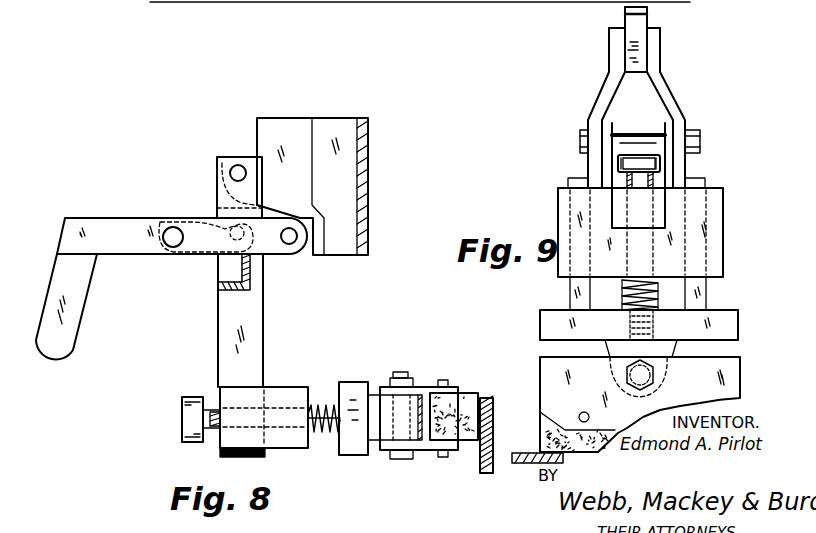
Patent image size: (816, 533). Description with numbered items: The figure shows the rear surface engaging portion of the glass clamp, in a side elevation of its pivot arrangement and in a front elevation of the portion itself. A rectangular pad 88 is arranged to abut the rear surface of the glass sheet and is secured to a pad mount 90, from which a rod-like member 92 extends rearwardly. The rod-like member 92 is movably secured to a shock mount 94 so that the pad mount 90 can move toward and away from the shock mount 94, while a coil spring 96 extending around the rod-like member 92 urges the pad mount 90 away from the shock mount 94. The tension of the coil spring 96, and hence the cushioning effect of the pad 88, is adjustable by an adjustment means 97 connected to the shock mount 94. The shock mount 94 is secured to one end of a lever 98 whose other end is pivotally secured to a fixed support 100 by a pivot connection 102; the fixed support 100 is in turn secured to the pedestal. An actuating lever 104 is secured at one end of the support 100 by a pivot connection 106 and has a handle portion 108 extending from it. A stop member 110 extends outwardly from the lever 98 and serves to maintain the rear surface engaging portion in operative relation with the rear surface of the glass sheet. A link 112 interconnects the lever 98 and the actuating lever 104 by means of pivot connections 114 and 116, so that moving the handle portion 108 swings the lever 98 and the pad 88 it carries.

In FIG. 8, the rectangular pad 88 is at (482, 398).
In FIG. 9, the rectangular pad 88 is at (542, 442).
In FIG. 8, the pad mount 90 is at (428, 387).
In FIG. 9, the pad mount 90 is at (740, 368).
In FIG. 8, the rod-like member 92 is at (212, 410).
In FIG. 9, the rod-like member 92 is at (653, 182).
In FIG. 8, the shock mount 94 is at (289, 387).
In FIG. 9, the shock mount 94 is at (723, 260).
In FIG. 8, the coil spring 96 is at (326, 394).
In FIG. 9, the coil spring 96 is at (655, 298).
In FIG. 8, the adjustment means 97 is at (182, 432).
In FIG. 9, the adjustment means 97 is at (660, 163).
In FIG. 8, the lever 98 is at (222, 325).
In FIG. 9, the lever 98 is at (667, 213).
In FIG. 8, the fixed support 100 is at (357, 112).
In FIG. 8, the pivot connection 102 is at (238, 165).
In FIG. 8, the actuating lever 104 is at (109, 222).
In FIG. 9, the actuating lever 104 is at (608, 89).
In FIG. 8, the pivot connection 106 is at (290, 245).
In FIG. 8, the handle portion 108 is at (72, 341).
In FIG. 9, the handle portion 108 is at (645, 15).
In FIG. 8, the stop member 110 is at (225, 270).
In FIG. 8, the link 112 is at (163, 225).
In FIG. 9, the link 112 is at (658, 130).
In FIG. 8, the pivot connection 114 is at (215, 221).
In FIG. 8, the pivot connection 116 is at (173, 226).
In FIG. 9, the pivot connection 116 is at (580, 137).